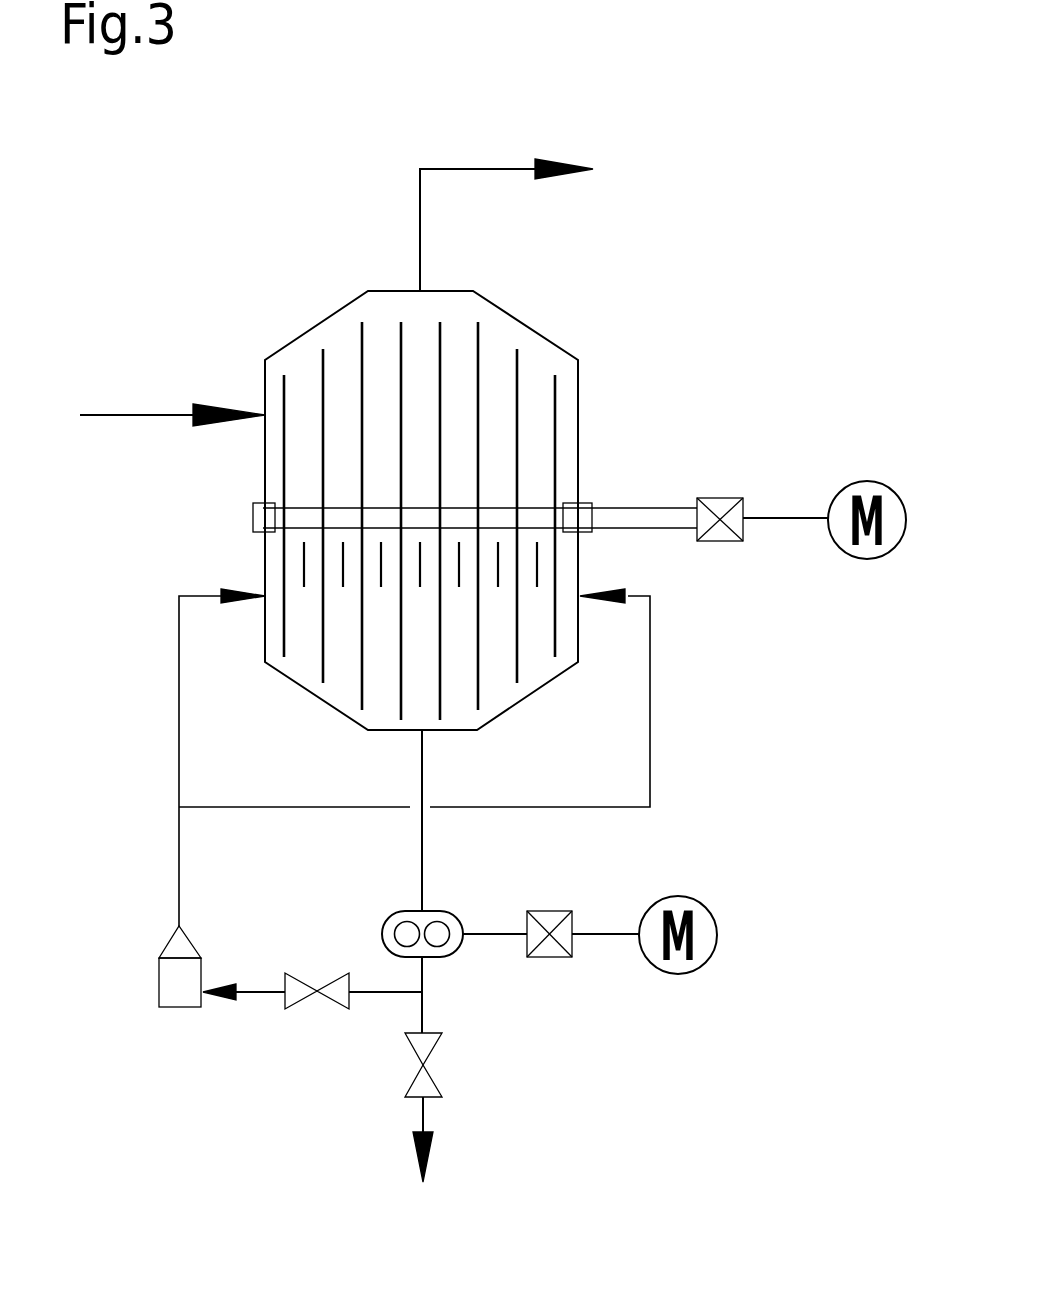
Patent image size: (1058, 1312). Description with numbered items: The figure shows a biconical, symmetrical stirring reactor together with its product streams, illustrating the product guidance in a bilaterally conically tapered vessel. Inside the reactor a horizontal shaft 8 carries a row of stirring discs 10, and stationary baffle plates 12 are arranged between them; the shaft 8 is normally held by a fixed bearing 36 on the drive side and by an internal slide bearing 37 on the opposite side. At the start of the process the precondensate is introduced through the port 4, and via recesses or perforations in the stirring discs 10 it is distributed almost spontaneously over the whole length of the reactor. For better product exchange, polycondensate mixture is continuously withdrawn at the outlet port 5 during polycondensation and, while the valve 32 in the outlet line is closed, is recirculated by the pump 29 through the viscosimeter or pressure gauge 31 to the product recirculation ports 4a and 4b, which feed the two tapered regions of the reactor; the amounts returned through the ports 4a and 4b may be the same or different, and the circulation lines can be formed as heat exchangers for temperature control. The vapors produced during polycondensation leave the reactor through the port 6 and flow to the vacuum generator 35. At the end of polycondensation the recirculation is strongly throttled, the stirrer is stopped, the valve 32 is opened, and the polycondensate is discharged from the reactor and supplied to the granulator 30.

The port 4 is at (257, 408).
The product recirculation port 4a is at (585, 600).
The product recirculation port 4b is at (266, 596).
The outlet port 5 is at (423, 745).
The port 6 is at (417, 284).
The shaft 8 is at (478, 514).
The stirring discs 10 is at (480, 333).
The baffle plates 12 is at (540, 553).
The pump 29 is at (462, 945).
The granulator 30 is at (439, 1161).
The viscosimeter or pressure gauge 31 is at (159, 967).
The valve 32 is at (413, 1062).
The vacuum generator 35 is at (586, 169).
The fixed bearing 36 is at (597, 502).
The internal slide bearing 37 is at (253, 517).